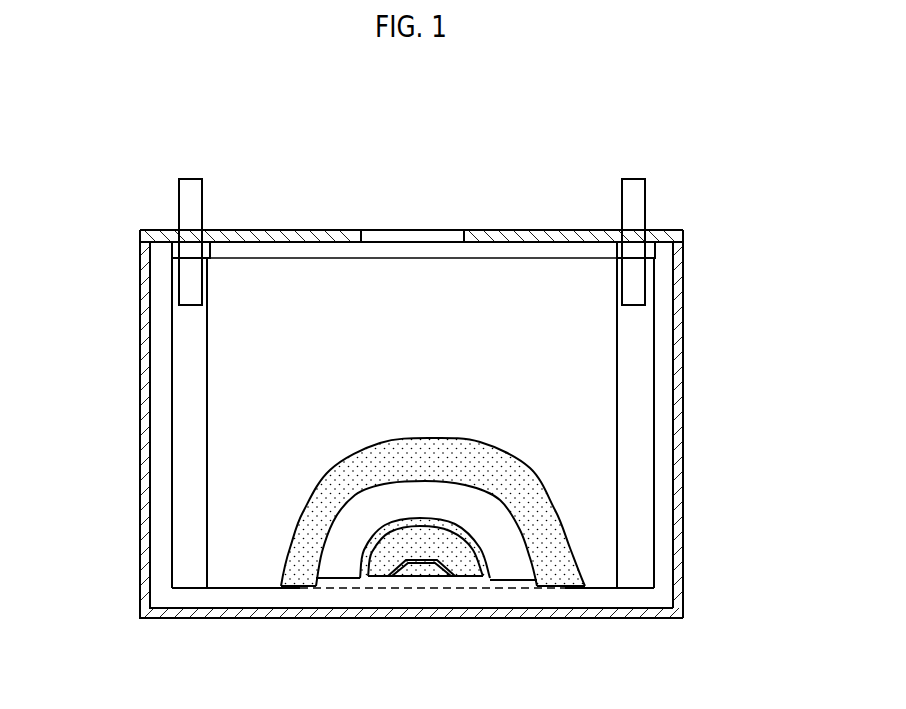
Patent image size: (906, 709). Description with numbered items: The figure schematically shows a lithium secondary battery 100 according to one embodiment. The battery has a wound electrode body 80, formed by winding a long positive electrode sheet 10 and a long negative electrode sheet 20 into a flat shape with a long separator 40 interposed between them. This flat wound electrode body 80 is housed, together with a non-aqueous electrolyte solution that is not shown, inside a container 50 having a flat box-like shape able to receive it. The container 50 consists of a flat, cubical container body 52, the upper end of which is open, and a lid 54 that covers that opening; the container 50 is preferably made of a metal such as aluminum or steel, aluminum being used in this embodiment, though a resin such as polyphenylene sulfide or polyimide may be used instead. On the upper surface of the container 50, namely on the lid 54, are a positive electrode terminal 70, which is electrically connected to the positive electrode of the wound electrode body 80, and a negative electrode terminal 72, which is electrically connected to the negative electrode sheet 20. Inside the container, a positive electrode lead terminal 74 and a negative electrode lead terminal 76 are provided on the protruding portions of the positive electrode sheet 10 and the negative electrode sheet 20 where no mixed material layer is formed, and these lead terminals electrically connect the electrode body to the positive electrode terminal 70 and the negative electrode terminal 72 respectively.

The lithium secondary battery 100 is at (425, 389).
The positive electrode sheet 10 is at (421, 567).
The negative electrode sheet 20 is at (345, 573).
The separator 40 is at (303, 568).
The container 50 is at (454, 424).
The container body 52 is at (683, 357).
The lid 54 is at (278, 237).
The positive electrode terminal 70 is at (192, 195).
The negative electrode terminal 72 is at (634, 195).
The positive electrode lead terminal 74 is at (193, 287).
The negative electrode lead terminal 76 is at (632, 283).
The wound electrode body 80 is at (413, 376).